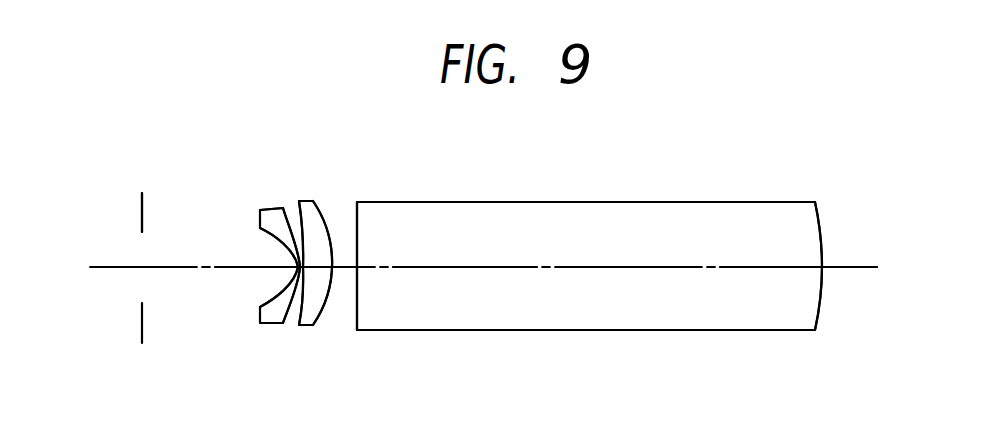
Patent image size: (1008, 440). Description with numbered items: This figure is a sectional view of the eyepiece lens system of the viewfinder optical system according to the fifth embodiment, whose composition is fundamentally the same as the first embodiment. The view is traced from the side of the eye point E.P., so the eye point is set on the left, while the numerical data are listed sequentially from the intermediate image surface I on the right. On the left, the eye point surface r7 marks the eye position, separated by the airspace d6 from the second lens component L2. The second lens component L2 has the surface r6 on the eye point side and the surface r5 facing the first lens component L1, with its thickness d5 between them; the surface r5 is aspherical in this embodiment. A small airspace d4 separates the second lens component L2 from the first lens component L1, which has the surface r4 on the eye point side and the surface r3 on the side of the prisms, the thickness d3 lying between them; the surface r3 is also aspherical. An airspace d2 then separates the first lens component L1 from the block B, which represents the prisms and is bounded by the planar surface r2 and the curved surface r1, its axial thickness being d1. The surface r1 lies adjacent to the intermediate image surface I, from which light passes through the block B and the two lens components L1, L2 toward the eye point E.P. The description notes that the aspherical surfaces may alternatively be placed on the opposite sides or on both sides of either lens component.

The radius of curvature of first surface r1 is at (818, 215).
The radius of curvature of second surface r2 is at (356, 227).
The radius of curvature of third surface r3 is at (319, 208).
The radius of curvature of fourth surface r4 is at (297, 210).
The radius of curvature of fifth surface r5 is at (274, 209).
The radius of curvature of sixth surface r6 is at (262, 229).
The eye point r7 is at (144, 212).
The thickness of first element d1 is at (513, 270).
The airspace between second and third surfaces d2 is at (347, 268).
The thickness of first lens component d3 is at (317, 272).
The airspace between first and second lens components d4 is at (296, 256).
The thickness of second lens component d5 is at (282, 279).
The airspace to eye point d6 is at (184, 269).
The first lens component L1 is at (306, 317).
The second lens component L2 is at (272, 316).
The glass block (prism) B is at (563, 313).
The intermediate image surface I is at (822, 270).
The eye point E.P. is at (146, 288).